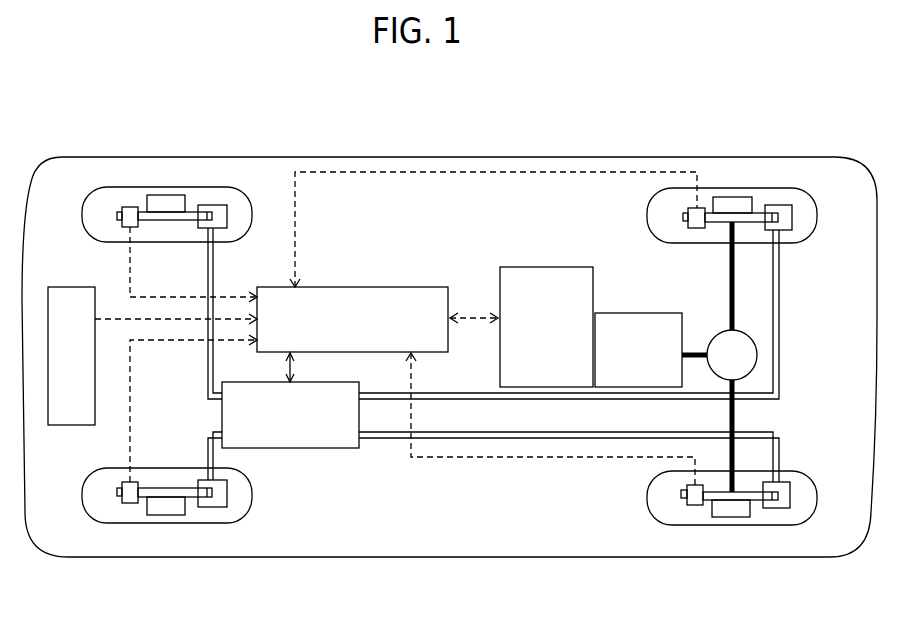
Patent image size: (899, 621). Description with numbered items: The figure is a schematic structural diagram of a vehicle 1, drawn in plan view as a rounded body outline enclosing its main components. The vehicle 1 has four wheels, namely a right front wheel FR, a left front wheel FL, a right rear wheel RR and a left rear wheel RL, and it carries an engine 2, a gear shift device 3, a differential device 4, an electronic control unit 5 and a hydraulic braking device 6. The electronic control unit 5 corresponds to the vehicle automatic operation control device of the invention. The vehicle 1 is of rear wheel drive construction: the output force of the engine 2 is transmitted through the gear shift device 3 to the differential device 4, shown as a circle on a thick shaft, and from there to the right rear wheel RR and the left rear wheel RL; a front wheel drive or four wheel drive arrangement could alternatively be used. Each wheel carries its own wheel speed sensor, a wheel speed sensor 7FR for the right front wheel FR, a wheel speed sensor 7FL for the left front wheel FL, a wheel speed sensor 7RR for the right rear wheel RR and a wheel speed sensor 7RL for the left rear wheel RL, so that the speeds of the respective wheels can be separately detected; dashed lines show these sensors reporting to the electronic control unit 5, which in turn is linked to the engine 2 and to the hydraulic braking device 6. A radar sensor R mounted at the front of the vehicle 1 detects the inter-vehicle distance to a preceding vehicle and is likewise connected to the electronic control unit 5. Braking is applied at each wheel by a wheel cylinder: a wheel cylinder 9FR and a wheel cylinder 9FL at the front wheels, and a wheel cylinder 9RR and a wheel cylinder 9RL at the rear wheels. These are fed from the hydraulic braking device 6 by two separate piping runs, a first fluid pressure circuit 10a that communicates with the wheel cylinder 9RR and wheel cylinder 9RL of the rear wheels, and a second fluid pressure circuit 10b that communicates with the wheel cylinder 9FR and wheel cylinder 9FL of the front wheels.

The vehicle 1 is at (52, 157).
The engine 2 is at (535, 267).
The gear shift device 3 is at (613, 313).
The differential device 4 is at (723, 342).
The electronic control unit 5 is at (448, 287).
The hydraulic braking device 6 is at (303, 448).
The wheel speed sensor 7FR is at (130, 207).
The wheel speed sensor 7FL is at (130, 503).
The wheel speed sensor 7RR is at (688, 208).
The wheel speed sensor 7RL is at (697, 505).
The wheel cylinder 9FR is at (218, 205).
The wheel cylinder 9FL is at (217, 507).
The wheel cylinder 9RR is at (787, 205).
The wheel cylinder 9RL is at (777, 508).
The first fluid pressure circuit 10a is at (487, 399).
The second fluid pressure circuit 10b is at (208, 438).
The radar sensor R is at (73, 287).
The right front wheel FR is at (192, 187).
The left front wheel FL is at (172, 523).
The right rear wheel RR is at (785, 243).
The left rear wheel RL is at (805, 488).